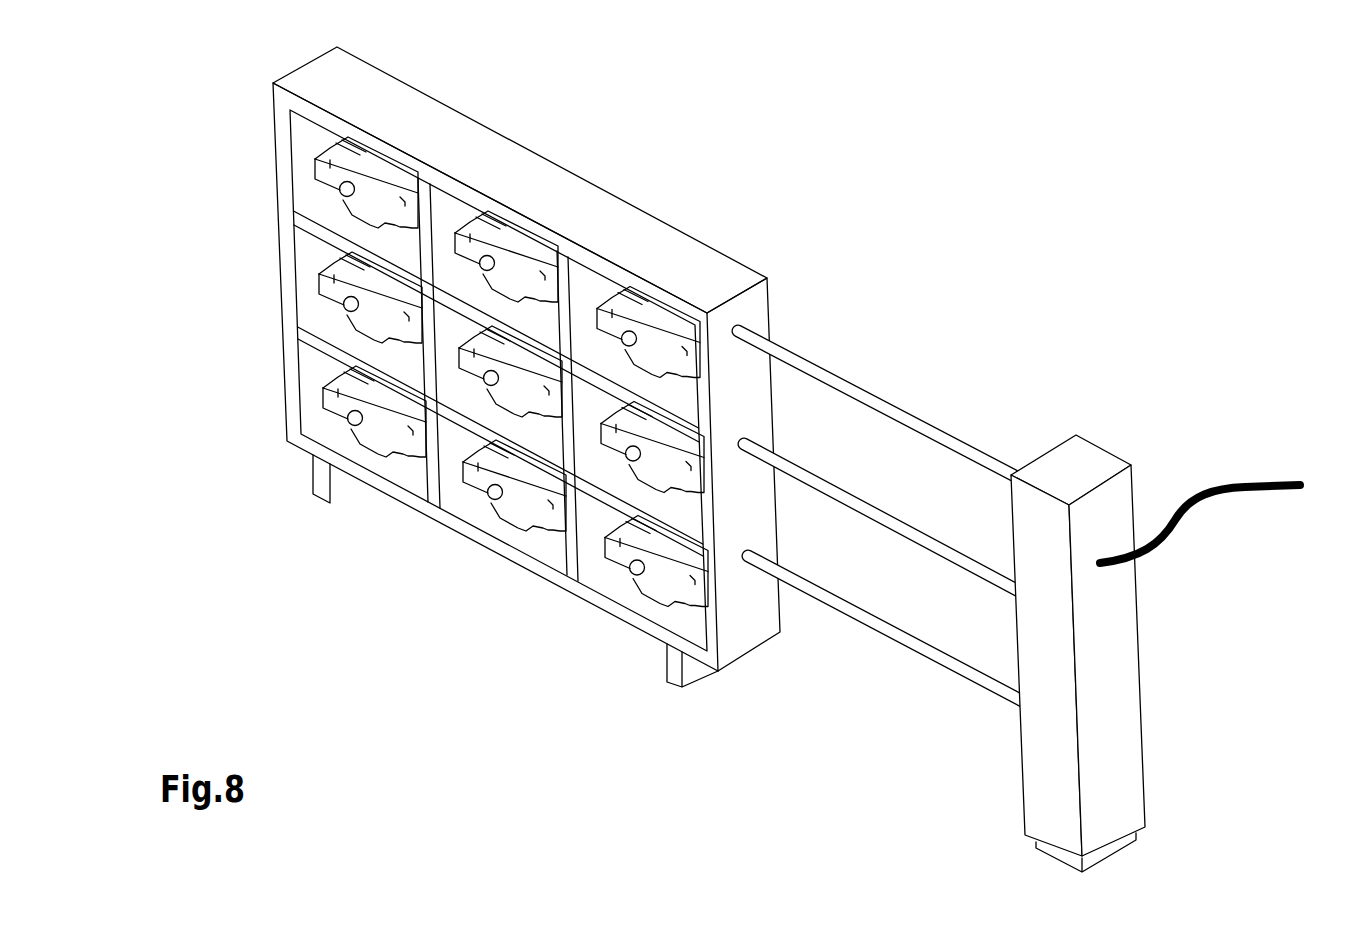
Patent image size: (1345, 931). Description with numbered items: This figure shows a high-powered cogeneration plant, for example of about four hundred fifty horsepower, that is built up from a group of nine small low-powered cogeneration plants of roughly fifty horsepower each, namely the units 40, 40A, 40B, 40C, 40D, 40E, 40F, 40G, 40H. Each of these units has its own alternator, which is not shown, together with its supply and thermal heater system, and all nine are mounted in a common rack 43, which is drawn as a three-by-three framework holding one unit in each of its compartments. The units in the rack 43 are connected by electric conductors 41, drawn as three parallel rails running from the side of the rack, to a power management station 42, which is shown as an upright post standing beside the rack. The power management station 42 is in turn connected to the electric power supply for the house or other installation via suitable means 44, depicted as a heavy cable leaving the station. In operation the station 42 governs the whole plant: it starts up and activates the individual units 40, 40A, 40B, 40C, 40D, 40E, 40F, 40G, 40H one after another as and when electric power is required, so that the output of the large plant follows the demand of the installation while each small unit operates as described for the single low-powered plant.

The low-powered cogeneration plant unit 40 is at (340, 187).
The low-powered cogeneration plant unit 40A is at (490, 265).
The low-powered cogeneration plant unit 40B is at (637, 335).
The low-powered cogeneration plant unit 40C is at (345, 306).
The low-powered cogeneration plant unit 40D is at (490, 380).
The low-powered cogeneration plant unit 40E is at (652, 468).
The low-powered cogeneration plant unit 40F is at (375, 435).
The low-powered cogeneration plant unit 40G is at (496, 497).
The low-powered cogeneration plant unit 40H is at (645, 574).
The electric conductors 41 is at (847, 376).
The power management station 42 is at (1025, 780).
The rack 43 is at (283, 98).
The suitable means 44 is at (1178, 502).